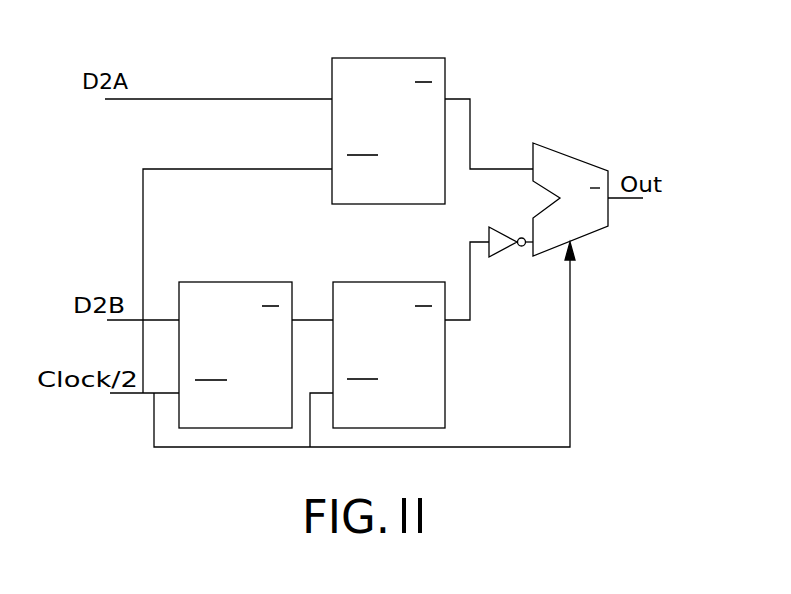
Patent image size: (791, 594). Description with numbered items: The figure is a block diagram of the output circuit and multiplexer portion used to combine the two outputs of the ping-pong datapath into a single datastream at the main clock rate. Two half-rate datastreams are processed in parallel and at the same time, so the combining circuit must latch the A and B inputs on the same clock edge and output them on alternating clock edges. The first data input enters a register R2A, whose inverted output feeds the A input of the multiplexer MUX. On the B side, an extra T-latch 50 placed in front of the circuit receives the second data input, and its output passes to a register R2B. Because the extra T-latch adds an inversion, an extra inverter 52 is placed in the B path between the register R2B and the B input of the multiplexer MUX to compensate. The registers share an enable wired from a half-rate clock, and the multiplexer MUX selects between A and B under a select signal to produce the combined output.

The T-latch 50 is at (242, 351).
The inverter 52 is at (500, 258).
The register R2A is at (388, 114).
The register R2B is at (389, 336).
The multiplexer MUX is at (572, 187).